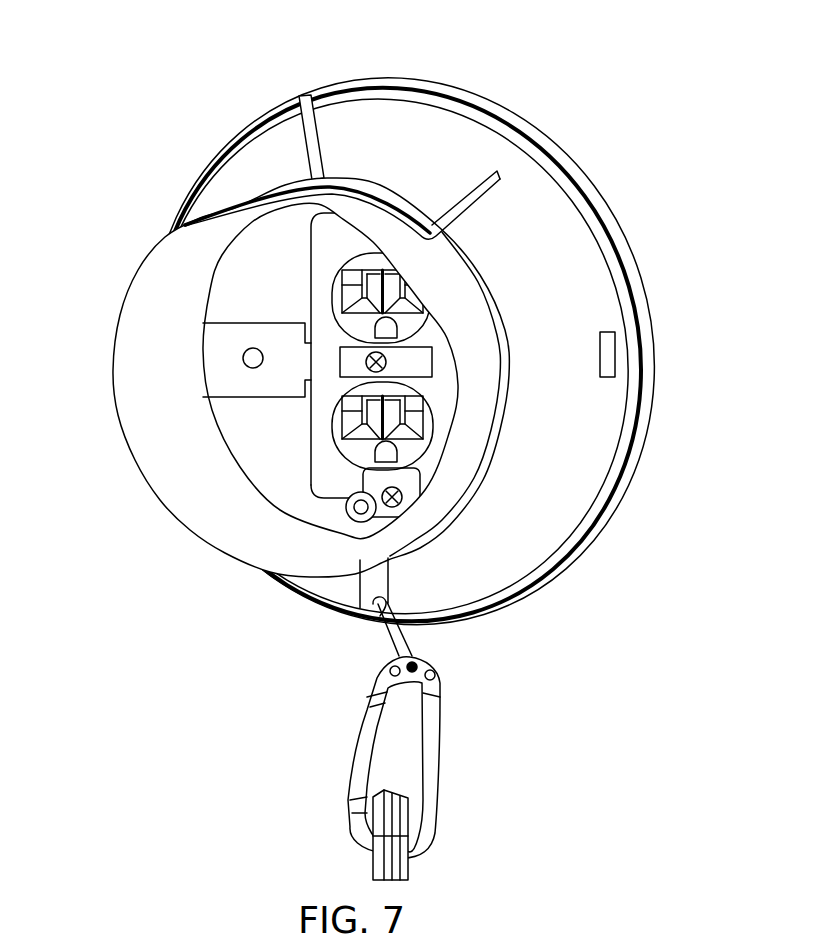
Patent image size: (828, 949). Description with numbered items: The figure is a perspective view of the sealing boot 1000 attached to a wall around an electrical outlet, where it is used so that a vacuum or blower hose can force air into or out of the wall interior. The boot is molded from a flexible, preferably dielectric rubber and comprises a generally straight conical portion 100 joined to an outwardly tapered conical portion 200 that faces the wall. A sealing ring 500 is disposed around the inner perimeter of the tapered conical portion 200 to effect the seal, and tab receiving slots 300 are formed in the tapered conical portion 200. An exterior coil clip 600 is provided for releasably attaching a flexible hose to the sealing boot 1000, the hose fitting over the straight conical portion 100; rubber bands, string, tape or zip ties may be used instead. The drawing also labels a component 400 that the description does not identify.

The sealing boot 1000 is at (388, 440).
The straight conical portion 100 is at (192, 523).
The outwardly tapered conical portion 200 is at (517, 578).
The tab receiving slots 300 is at (615, 356).
The mounting plate 400 is at (217, 360).
The sealing ring 500 is at (607, 518).
The exterior coil clip 600 is at (359, 336).